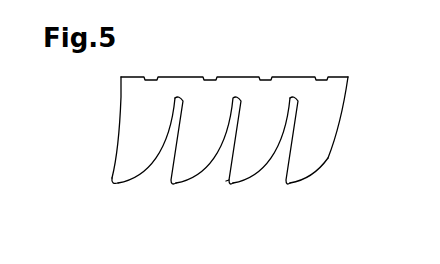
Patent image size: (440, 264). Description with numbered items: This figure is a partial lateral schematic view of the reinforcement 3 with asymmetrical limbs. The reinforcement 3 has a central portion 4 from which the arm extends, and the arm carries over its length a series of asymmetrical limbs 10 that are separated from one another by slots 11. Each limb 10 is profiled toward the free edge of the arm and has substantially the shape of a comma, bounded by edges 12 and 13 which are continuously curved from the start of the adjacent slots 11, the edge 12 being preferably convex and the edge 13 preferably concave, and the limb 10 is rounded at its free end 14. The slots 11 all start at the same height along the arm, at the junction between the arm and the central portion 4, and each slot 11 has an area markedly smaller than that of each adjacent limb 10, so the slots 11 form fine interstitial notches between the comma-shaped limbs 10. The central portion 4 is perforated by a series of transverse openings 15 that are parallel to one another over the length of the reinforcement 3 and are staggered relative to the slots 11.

The reinforcement 3 is at (102, 137).
The central portion 4 is at (354, 84).
The asymmetrical limb 10 is at (216, 136).
The slot 11 is at (159, 170).
The convex edge 12 is at (328, 157).
The concave edge 13 is at (227, 182).
The free end 14 is at (116, 185).
The transverse opening 15 is at (206, 76).